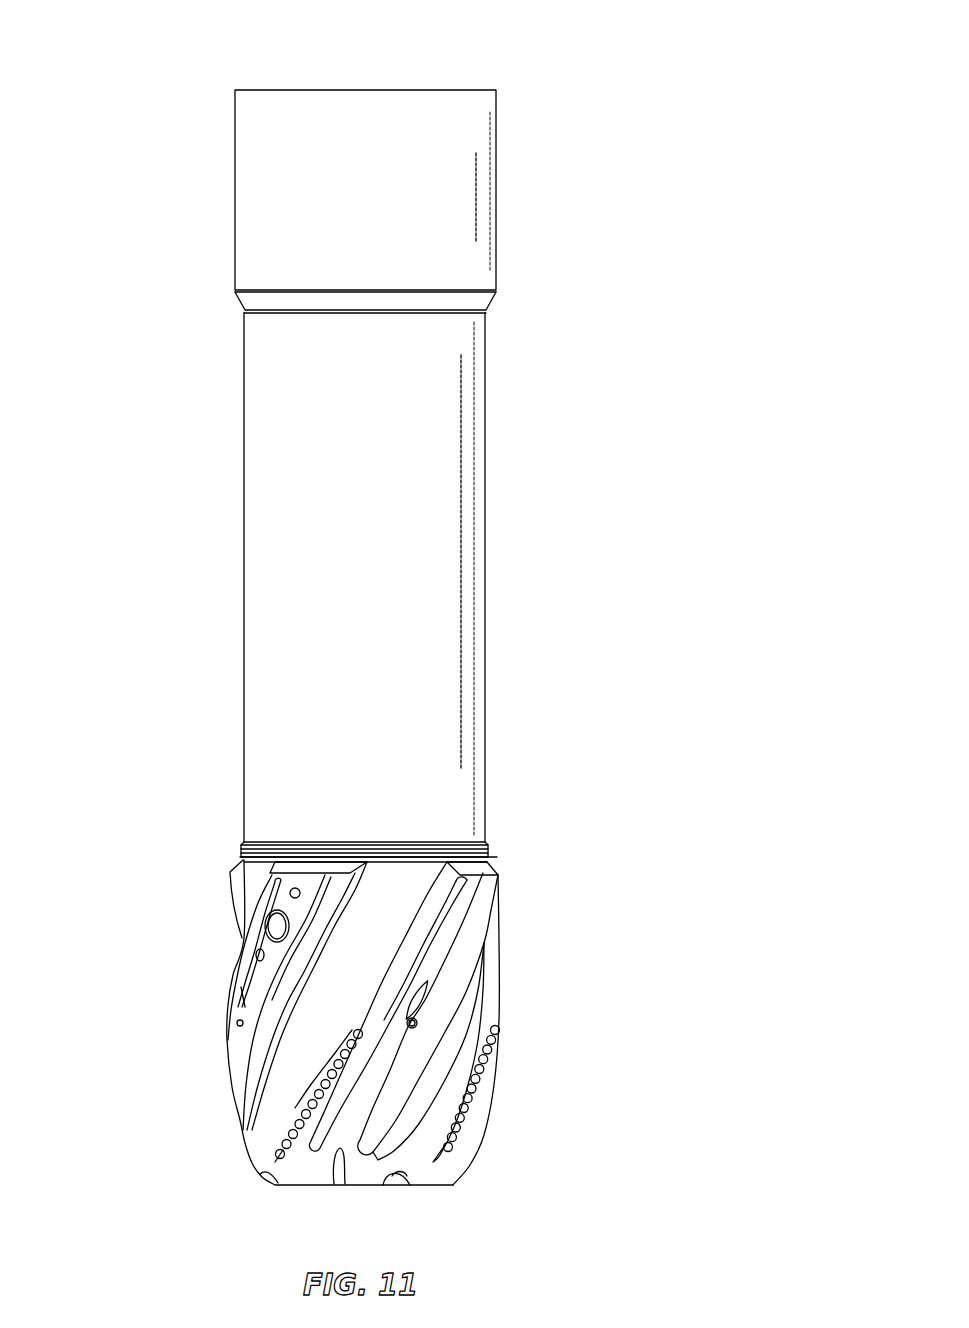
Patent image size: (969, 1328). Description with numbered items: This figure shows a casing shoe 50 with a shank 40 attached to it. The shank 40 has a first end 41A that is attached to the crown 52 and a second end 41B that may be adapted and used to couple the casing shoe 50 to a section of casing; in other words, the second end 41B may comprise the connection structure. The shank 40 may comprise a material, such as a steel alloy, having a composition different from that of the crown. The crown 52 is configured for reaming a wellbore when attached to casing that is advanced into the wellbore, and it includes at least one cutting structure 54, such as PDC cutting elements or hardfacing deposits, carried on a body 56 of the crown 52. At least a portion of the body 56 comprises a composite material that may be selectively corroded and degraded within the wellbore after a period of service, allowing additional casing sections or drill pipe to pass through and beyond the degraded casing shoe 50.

The casing shoe 50 is at (167, 82).
The second end 41B is at (512, 96).
The shank 40 is at (442, 455).
The first end 41A is at (496, 825).
The crown 52 is at (238, 1146).
The cutting structure 54 is at (497, 1087).
The body 56 is at (398, 905).